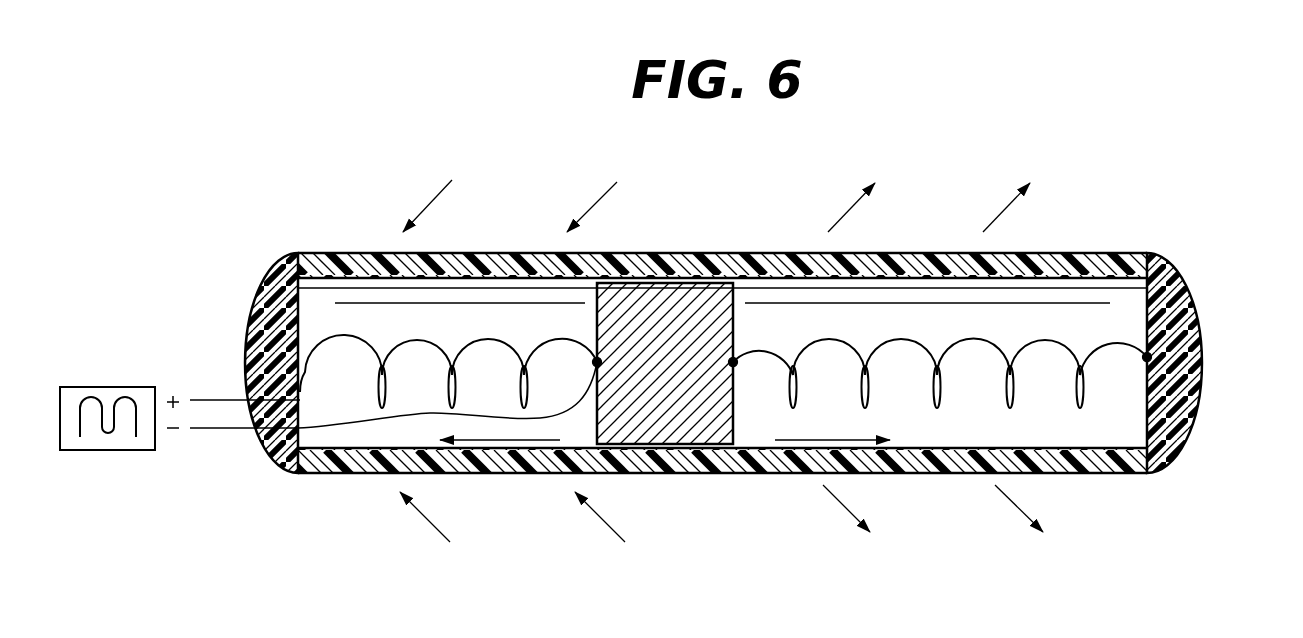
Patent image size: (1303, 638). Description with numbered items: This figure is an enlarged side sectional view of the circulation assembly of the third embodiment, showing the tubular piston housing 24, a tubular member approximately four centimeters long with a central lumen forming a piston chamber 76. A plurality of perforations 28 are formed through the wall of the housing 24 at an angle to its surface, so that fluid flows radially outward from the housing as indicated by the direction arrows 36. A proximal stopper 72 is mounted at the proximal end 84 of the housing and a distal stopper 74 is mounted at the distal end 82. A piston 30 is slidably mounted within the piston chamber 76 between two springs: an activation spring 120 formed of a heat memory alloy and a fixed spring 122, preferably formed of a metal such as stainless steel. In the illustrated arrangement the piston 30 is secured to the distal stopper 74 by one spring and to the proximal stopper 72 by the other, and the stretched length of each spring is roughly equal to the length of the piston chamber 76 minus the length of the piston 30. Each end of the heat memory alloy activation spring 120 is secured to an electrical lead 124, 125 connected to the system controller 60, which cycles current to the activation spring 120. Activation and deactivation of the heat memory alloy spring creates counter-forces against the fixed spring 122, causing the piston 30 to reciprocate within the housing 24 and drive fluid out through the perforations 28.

The piston housing 24 is at (740, 376).
The perforations 28 is at (895, 258).
The piston 30 is at (697, 298).
The direction arrows 36 is at (428, 205).
The system controller 60 is at (105, 386).
The proximal stopper 72 is at (253, 290).
The distal stopper 74 is at (1203, 358).
The piston chamber 76 is at (931, 448).
The distal end 82 is at (1110, 258).
The proximal end 84 is at (333, 475).
The activation spring 120 is at (332, 338).
The fixed spring 122 is at (1083, 408).
The electrical lead 124 is at (205, 398).
The electrical lead 125 is at (212, 430).